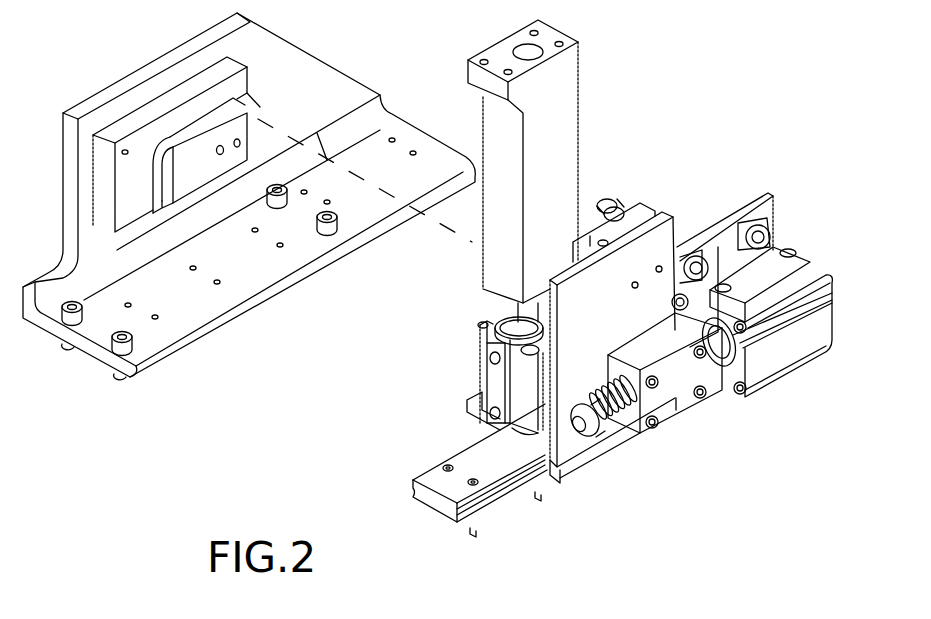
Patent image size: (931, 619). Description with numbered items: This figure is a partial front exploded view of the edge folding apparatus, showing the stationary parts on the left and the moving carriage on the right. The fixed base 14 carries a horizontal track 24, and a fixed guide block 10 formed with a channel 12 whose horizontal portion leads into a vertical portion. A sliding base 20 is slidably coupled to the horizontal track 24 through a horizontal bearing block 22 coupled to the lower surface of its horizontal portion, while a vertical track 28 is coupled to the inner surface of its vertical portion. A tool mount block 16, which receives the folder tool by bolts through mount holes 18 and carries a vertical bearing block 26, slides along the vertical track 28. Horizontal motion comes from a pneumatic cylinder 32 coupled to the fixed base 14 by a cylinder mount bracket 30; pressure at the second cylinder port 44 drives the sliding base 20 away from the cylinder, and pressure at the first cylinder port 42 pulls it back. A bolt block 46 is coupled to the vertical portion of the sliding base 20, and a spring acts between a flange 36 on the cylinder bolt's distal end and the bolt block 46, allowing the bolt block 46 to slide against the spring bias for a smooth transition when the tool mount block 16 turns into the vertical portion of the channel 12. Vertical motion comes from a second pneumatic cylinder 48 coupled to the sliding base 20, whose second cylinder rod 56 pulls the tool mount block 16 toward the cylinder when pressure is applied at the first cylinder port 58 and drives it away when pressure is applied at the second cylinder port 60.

The fixed guide block 10 is at (125, 122).
The channel 12 is at (167, 178).
The fixed base 14 is at (148, 69).
The tool mount block 16 is at (570, 123).
The mount holes 18 is at (558, 52).
The sliding base 20 is at (560, 457).
The horizontal bearing block 22 is at (553, 473).
The horizontal track 24 is at (432, 498).
The vertical bearing block 26 is at (592, 240).
The vertical track 28 is at (645, 215).
The cylinder mount bracket 30 is at (758, 193).
The pneumatic cylinder 32 is at (780, 367).
The flange 36 is at (577, 398).
The first cylinder port 42 is at (725, 285).
The second cylinder port 44 is at (788, 252).
The bolt block 46 is at (680, 407).
The second pneumatic cylinder 48 is at (490, 380).
The second cylinder rod 56 is at (520, 315).
The first cylinder port 58 is at (495, 357).
The second cylinder port 60 is at (490, 415).